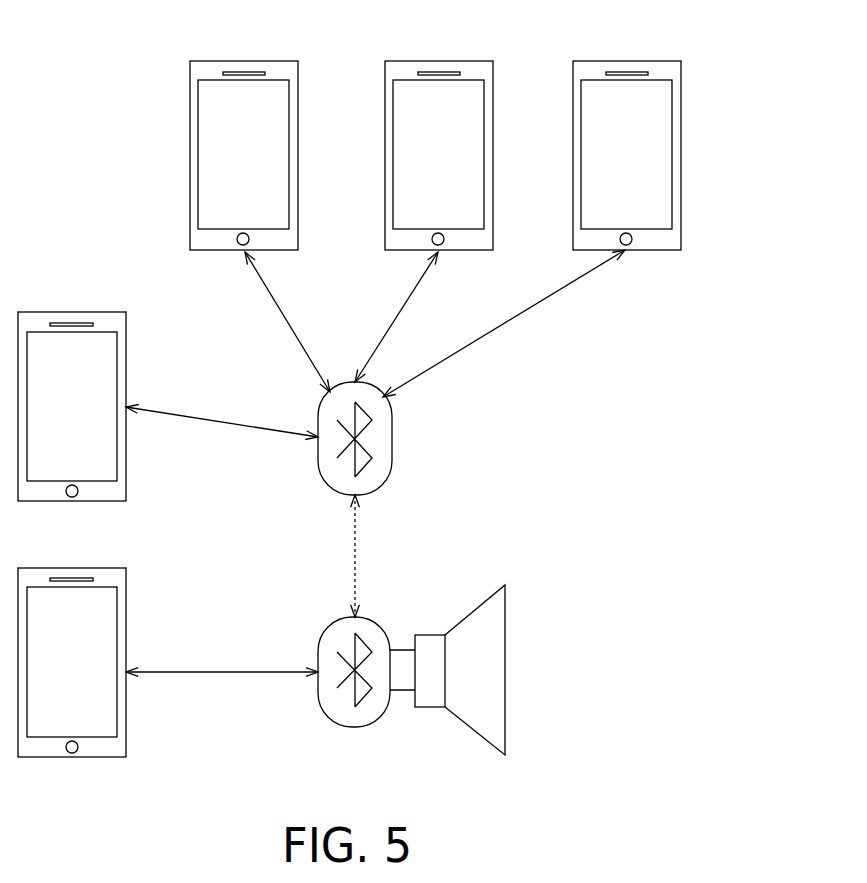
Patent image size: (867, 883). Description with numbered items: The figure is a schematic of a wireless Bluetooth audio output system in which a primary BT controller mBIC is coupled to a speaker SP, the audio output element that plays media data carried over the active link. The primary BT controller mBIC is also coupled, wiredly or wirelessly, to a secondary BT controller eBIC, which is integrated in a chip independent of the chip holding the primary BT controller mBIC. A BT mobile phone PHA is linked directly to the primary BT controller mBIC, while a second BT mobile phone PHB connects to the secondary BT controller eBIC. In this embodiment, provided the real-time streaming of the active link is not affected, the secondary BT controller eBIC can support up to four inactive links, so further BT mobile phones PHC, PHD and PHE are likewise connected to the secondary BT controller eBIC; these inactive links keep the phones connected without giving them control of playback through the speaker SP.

The BT mobile phone PHA is at (88, 568).
The BT mobile phone PHB is at (88, 312).
The BT mobile phone PHC is at (260, 61).
The BT mobile phone PHD is at (456, 61).
The BT mobile phone PHE is at (644, 61).
The secondary BT controller eBIC is at (392, 435).
The primary BT controller mBIC is at (370, 618).
The speaker SP is at (474, 733).